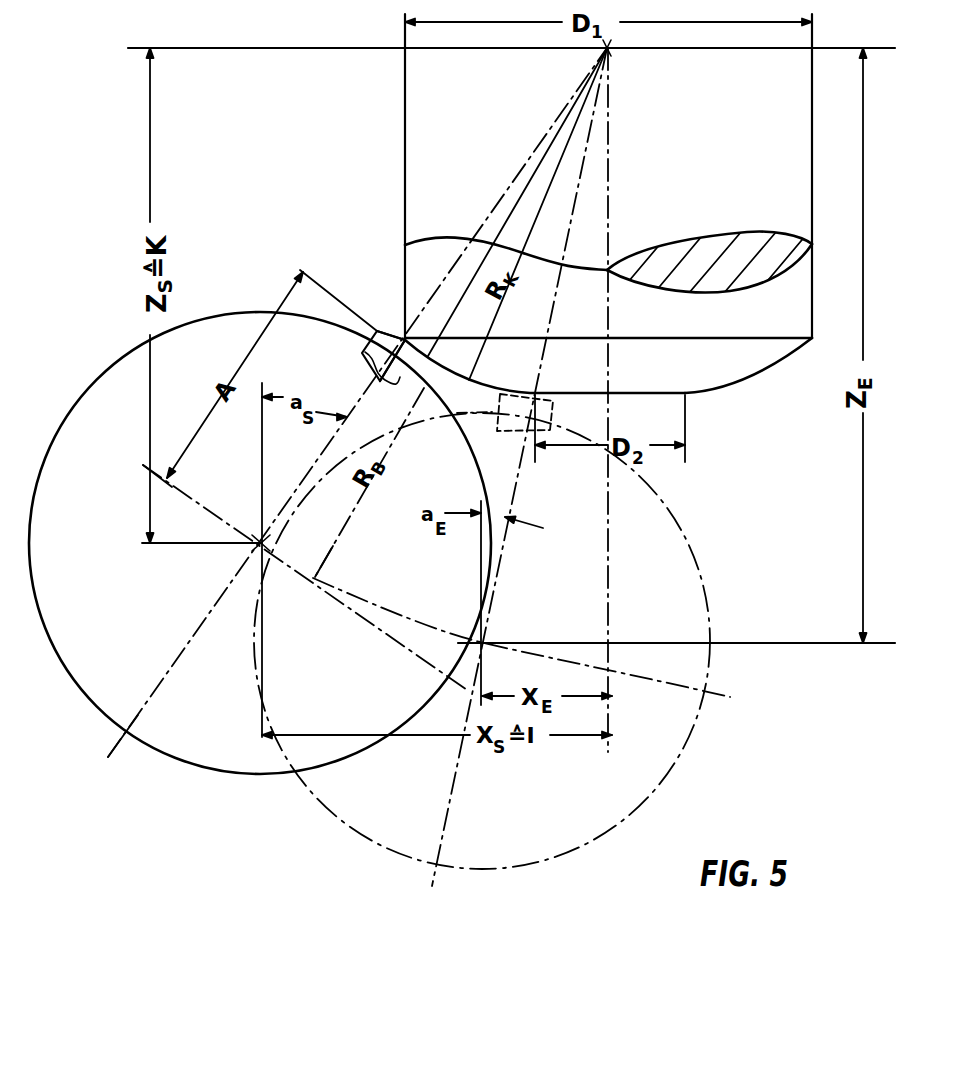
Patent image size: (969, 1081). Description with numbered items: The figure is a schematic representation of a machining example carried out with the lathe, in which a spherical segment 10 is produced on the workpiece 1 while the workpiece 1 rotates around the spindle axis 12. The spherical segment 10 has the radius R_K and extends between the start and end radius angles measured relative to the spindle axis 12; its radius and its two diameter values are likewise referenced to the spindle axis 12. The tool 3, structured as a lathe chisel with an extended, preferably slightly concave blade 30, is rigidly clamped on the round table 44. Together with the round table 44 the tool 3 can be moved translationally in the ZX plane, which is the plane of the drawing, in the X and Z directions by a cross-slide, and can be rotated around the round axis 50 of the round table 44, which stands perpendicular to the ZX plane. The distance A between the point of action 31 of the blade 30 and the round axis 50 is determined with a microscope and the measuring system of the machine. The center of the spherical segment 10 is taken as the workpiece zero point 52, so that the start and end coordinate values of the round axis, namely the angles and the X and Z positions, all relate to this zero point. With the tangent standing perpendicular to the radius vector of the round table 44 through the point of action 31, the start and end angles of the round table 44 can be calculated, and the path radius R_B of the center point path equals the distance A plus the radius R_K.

The workpiece 1 is at (797, 308).
The tool 3 is at (364, 349).
The spherical segment 10 is at (745, 378).
The spindle axis 12 is at (608, 118).
The blade 30 is at (402, 336).
The point of action 31 is at (405, 338).
The round table 44 is at (215, 752).
The round axis 50 is at (262, 543).
The workpiece zero point 52 is at (609, 50).